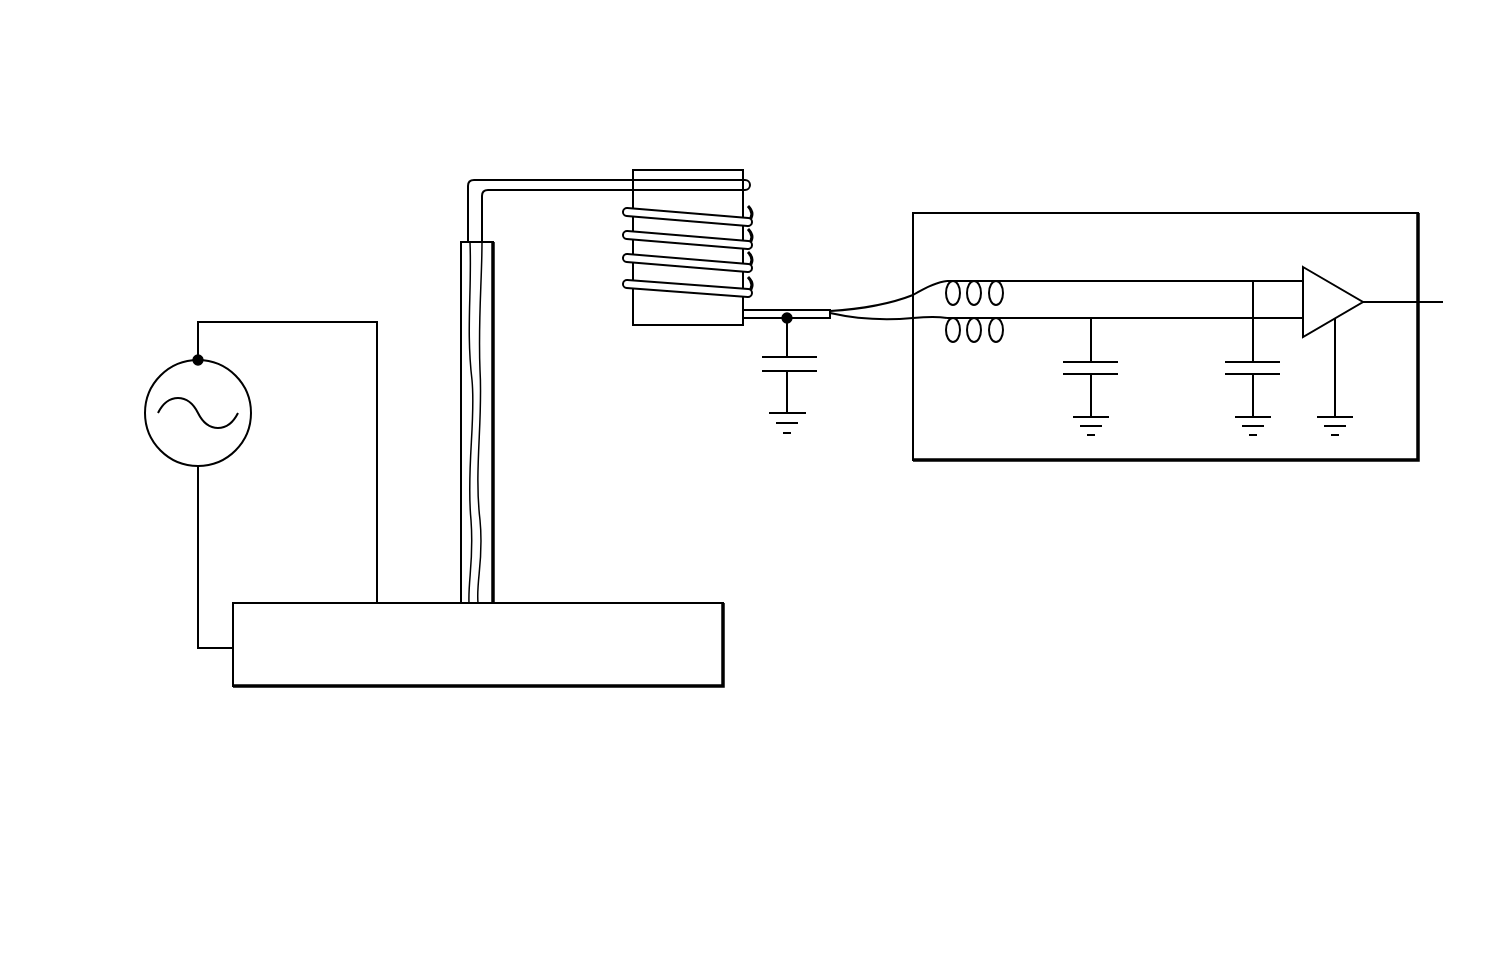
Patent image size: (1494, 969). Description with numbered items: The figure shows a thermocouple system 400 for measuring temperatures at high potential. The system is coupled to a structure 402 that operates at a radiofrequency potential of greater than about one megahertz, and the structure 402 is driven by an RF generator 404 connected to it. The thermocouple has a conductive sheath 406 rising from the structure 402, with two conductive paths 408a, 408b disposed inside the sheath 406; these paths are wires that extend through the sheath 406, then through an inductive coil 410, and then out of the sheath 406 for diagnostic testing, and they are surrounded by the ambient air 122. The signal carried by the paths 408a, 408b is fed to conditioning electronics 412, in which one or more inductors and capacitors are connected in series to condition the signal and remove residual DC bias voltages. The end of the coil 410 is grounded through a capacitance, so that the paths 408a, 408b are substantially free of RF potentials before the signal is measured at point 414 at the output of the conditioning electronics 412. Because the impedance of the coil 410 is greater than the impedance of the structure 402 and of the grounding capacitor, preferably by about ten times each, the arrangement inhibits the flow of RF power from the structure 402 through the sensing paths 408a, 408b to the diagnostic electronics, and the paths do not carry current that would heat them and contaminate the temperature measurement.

The thermocouple system 400 is at (843, 728).
The air 122 is at (331, 167).
The structure 402 is at (458, 658).
The RF generator 404 is at (246, 388).
The conductive sheath 406 is at (494, 497).
The conductive path 408a is at (470, 422).
The conductive path 408b is at (892, 322).
The inductive coil 410 is at (678, 58).
The conditioning electronics 412 is at (1376, 248).
The measurement point 414 is at (1443, 302).